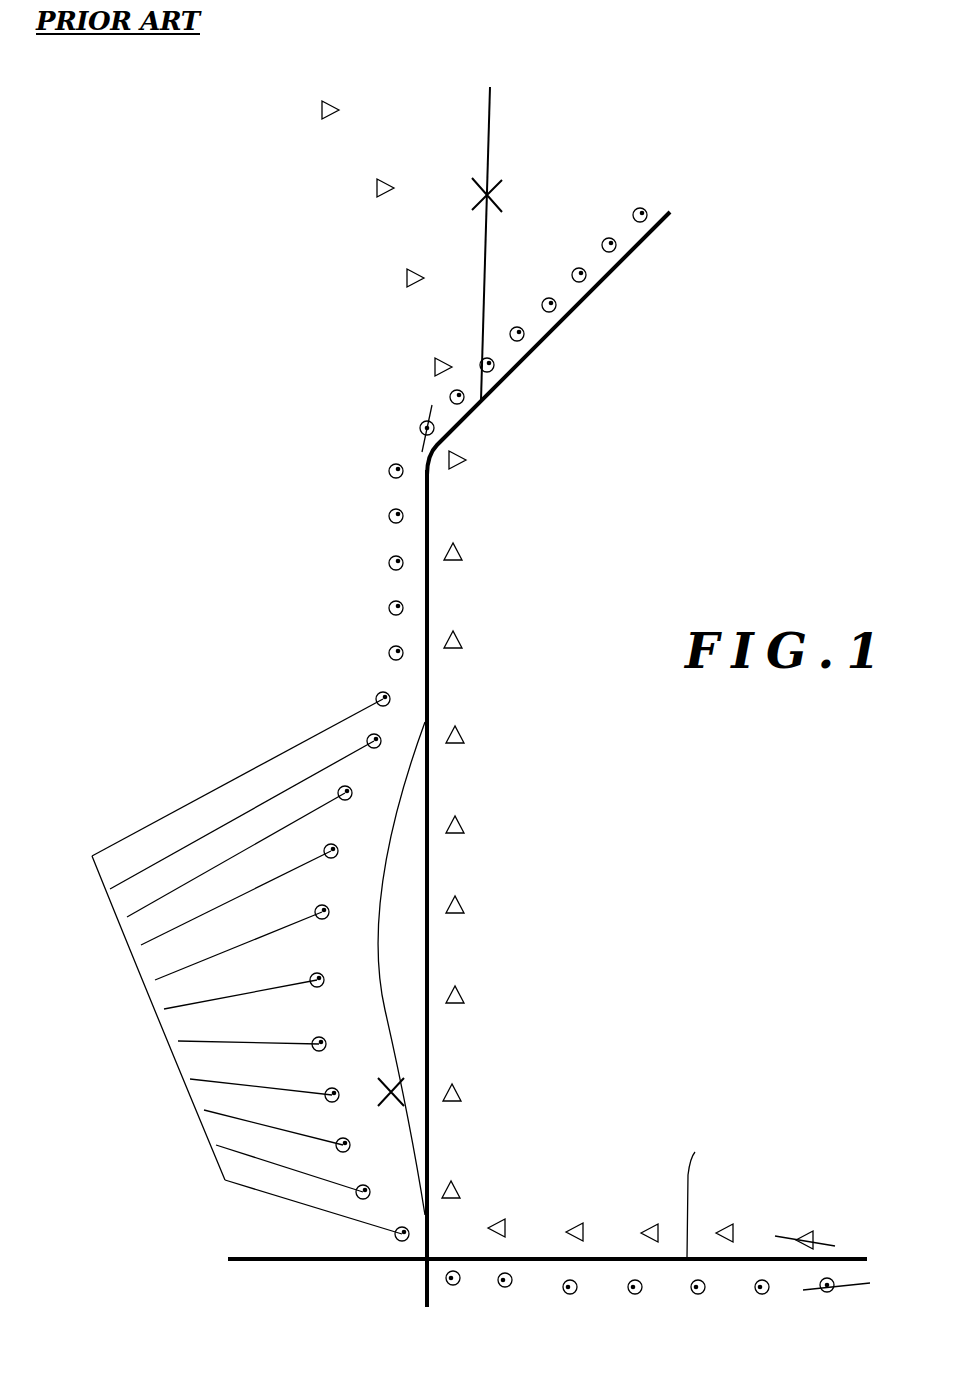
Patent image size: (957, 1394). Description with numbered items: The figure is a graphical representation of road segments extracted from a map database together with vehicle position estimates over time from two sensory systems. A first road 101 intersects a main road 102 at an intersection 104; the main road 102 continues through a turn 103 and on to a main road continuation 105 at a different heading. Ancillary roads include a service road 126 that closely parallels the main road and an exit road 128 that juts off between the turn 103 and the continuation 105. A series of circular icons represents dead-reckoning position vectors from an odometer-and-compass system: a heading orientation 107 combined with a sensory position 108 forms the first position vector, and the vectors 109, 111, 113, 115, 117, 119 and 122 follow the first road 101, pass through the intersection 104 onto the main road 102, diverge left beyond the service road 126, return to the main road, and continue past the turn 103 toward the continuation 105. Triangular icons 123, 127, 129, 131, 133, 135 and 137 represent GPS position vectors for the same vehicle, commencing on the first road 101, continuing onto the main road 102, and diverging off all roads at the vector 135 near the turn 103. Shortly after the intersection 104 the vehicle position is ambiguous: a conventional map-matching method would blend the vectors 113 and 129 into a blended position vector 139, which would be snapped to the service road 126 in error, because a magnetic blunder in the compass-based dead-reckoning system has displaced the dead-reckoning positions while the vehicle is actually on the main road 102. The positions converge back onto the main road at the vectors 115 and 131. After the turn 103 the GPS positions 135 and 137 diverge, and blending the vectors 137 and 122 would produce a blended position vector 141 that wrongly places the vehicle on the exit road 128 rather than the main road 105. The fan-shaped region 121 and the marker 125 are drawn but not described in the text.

The first road 101 is at (711, 1189).
The main road 102 is at (427, 1133).
The turn 103 is at (425, 457).
The intersection 104 is at (427, 1262).
The main road continuation 105 is at (648, 238).
The heading orientation 107 is at (840, 1284).
The sensory position 108 is at (825, 1292).
The dead-reckoning position vector 109 is at (458, 1289).
The dead-reckoning position vector 111 is at (394, 1234).
The dead-reckoning position vector 113 is at (326, 1090).
The dead-reckoning position vector 115 is at (389, 653).
The dead-reckoning position vector 117 is at (420, 425).
The dead-reckoning position vector 119 is at (545, 298).
The fan-shaped region 121 is at (92, 862).
The dead-reckoning position vector 122 is at (635, 206).
The GPS position vector 123 is at (802, 1242).
The leader marker 125 is at (795, 1240).
The service road 126 is at (382, 970).
The GPS position vector 127 is at (505, 1224).
The exit road 128 is at (490, 125).
The GPS position vector 129 is at (462, 1093).
The GPS position vector 131 is at (462, 646).
The GPS position vector 133 is at (466, 460).
The GPS position vector 135 is at (435, 368).
The GPS position vector 137 is at (376, 190).
The blended position vector 139 is at (391, 1102).
The blended position vector 141 is at (489, 197).